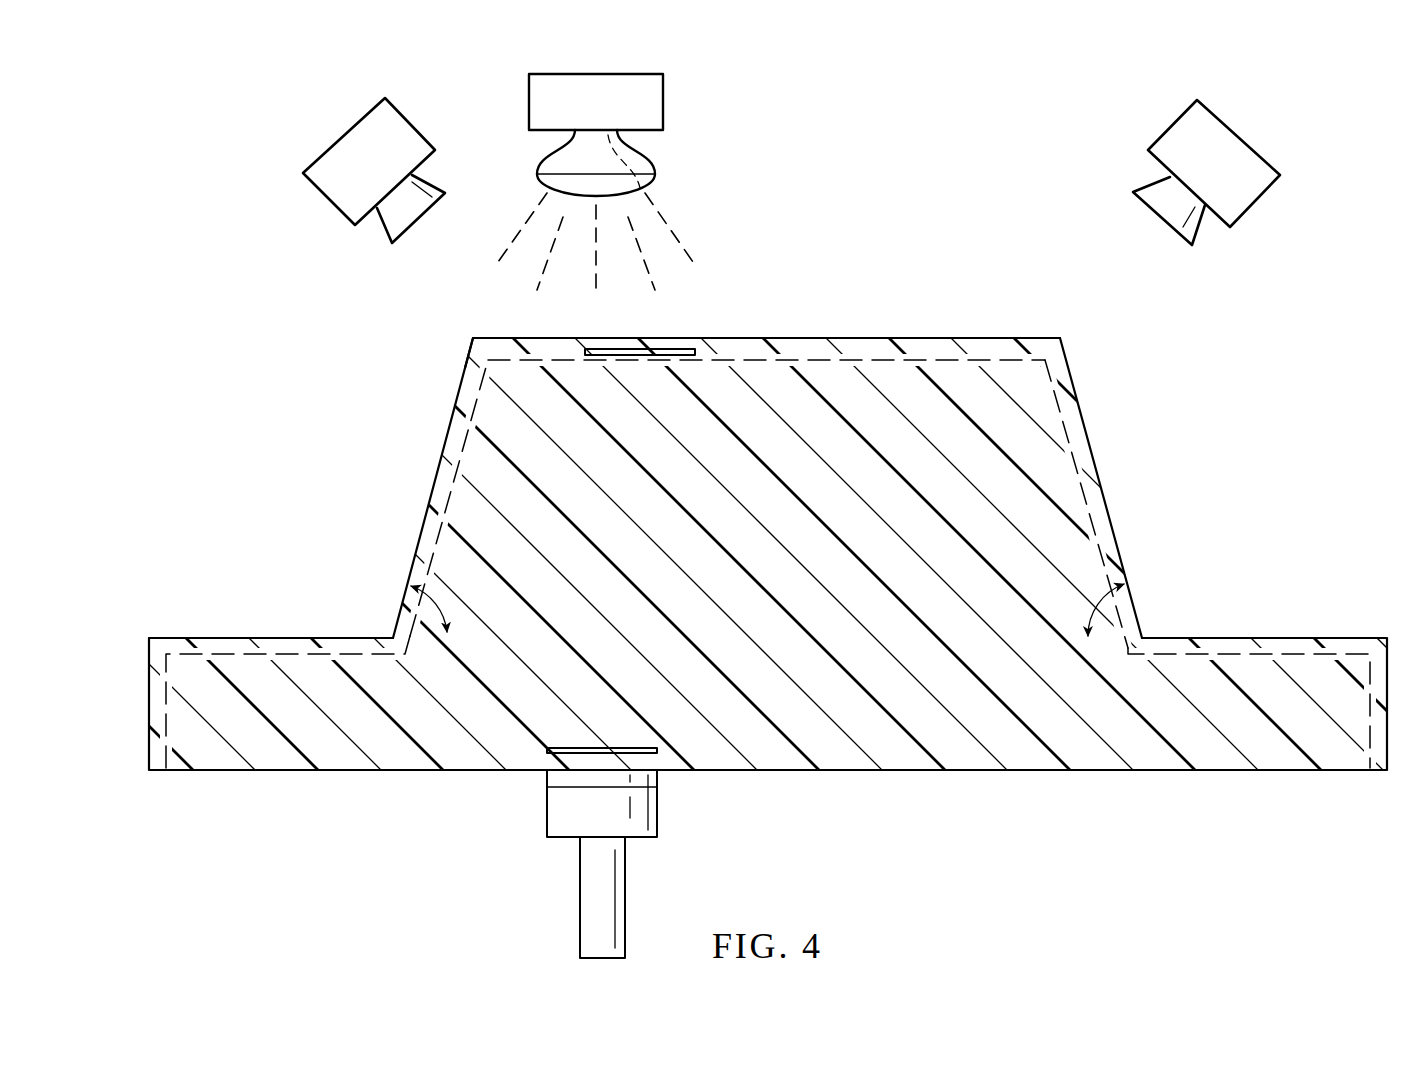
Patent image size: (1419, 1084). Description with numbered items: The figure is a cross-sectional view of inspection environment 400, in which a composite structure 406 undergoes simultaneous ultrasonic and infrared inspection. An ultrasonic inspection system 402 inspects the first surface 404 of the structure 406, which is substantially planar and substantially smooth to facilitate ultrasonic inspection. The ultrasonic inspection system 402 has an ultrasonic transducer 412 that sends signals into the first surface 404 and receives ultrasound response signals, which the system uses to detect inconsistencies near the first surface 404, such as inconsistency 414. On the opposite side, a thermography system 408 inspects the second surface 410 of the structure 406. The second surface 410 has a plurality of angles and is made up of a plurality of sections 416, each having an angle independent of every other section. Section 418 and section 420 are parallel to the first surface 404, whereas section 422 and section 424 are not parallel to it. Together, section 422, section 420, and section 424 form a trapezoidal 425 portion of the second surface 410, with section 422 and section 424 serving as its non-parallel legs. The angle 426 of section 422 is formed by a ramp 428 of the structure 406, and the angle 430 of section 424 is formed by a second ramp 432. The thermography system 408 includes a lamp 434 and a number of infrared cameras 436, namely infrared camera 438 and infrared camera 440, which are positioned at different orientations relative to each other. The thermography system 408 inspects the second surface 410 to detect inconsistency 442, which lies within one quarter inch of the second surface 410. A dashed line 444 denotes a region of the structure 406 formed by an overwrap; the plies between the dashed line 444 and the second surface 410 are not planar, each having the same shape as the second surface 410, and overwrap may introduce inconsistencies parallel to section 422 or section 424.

The inspection environment 400 is at (203, 95).
The ultrasonic inspection system 402 is at (543, 810).
The first surface 404 is at (222, 773).
The structure 406 is at (433, 480).
The thermography system 408 is at (255, 170).
The second surface 410 is at (923, 337).
The ultrasonic transducer 412 is at (662, 810).
The inconsistency 414 is at (600, 748).
The plurality of sections 416 is at (257, 546).
The section 418 is at (222, 638).
The section 420 is at (797, 337).
The section 422 is at (420, 532).
The section 424 is at (1112, 517).
The trapezoidal portion 425 is at (450, 327).
The angle 426 is at (443, 603).
The ramp 428 is at (470, 385).
The angle 430 is at (1092, 603).
The second ramp 432 is at (1075, 428).
The lamp 434 is at (522, 83).
The number of infrared cameras 436 is at (330, 105).
The infrared camera 438 is at (318, 158).
The infrared camera 440 is at (1240, 134).
The inconsistency 442 is at (627, 350).
The dashed line 444 is at (1238, 654).